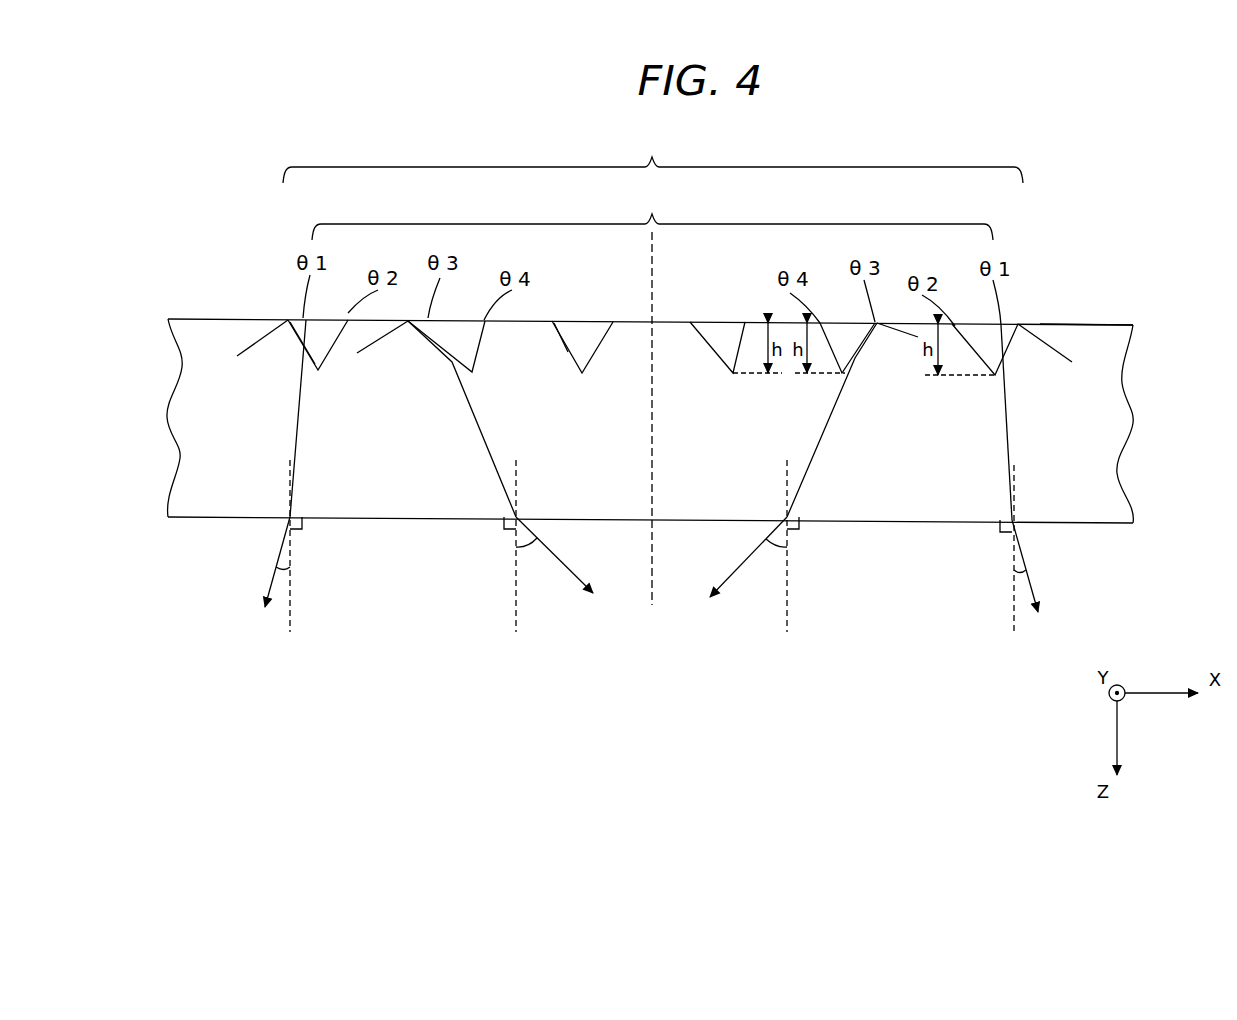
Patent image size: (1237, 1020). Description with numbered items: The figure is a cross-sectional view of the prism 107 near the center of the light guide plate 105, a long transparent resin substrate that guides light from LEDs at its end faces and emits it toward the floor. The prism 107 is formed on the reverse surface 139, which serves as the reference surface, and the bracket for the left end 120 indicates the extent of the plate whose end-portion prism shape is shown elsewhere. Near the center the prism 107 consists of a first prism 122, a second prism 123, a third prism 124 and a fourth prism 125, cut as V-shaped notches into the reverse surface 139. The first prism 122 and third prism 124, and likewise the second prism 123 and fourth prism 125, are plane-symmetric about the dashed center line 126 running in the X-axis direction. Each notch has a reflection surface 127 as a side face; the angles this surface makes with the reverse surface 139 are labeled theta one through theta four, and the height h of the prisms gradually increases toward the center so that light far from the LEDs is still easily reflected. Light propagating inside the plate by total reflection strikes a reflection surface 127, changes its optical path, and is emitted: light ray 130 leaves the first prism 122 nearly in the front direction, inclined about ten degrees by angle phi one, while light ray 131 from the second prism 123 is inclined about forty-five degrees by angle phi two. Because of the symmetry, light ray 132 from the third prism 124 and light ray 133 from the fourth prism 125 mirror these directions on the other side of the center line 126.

The light guide plate 105 is at (1105, 425).
The prism 107 is at (652, 211).
The left end 120 is at (653, 154).
The first prism 122 is at (325, 332).
The second prism 123 is at (455, 332).
The third prism 124 is at (722, 336).
The fourth prism 125 is at (847, 337).
The center line 126 is at (655, 420).
The reflection surface 127 is at (552, 320).
The light ray 130 is at (265, 479).
The light ray 131 is at (512, 476).
The light ray 132 is at (783, 477).
The light ray 133 is at (1041, 485).
The reverse surface 139 is at (1077, 324).